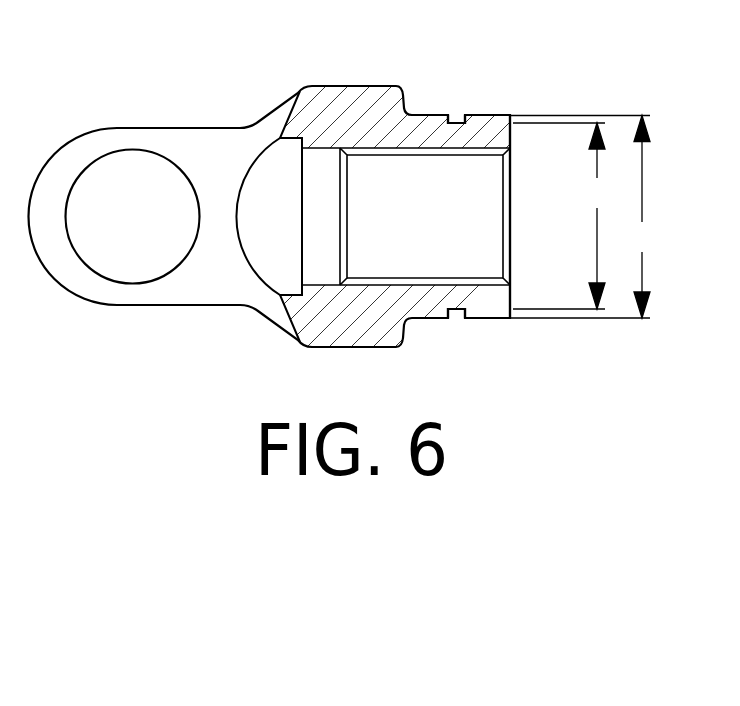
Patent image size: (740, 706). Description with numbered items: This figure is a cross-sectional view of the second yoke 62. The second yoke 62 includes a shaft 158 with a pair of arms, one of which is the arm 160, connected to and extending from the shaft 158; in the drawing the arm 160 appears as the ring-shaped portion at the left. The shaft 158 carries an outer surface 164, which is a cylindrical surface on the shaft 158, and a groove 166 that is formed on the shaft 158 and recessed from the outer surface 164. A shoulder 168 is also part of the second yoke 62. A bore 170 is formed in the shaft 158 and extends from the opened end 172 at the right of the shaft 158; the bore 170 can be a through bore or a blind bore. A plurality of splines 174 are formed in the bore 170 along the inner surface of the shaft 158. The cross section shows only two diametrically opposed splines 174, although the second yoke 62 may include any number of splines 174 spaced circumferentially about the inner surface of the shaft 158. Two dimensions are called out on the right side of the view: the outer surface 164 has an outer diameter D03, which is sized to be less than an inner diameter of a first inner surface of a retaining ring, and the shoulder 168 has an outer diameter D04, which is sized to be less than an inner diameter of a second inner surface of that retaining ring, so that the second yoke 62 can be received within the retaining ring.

The second yoke 62 is at (158, 85).
The shaft 158 is at (349, 86).
The arm 160 is at (166, 305).
The outer surface 164 is at (425, 115).
The groove 166 is at (457, 116).
The shoulder 168 is at (500, 318).
The bore 170 is at (412, 217).
The opened end 172 is at (512, 257).
The splines 174 is at (465, 278).
The outer diameter of outer surface D03 is at (564, 216).
The outer diameter of shoulder D04 is at (586, 217).